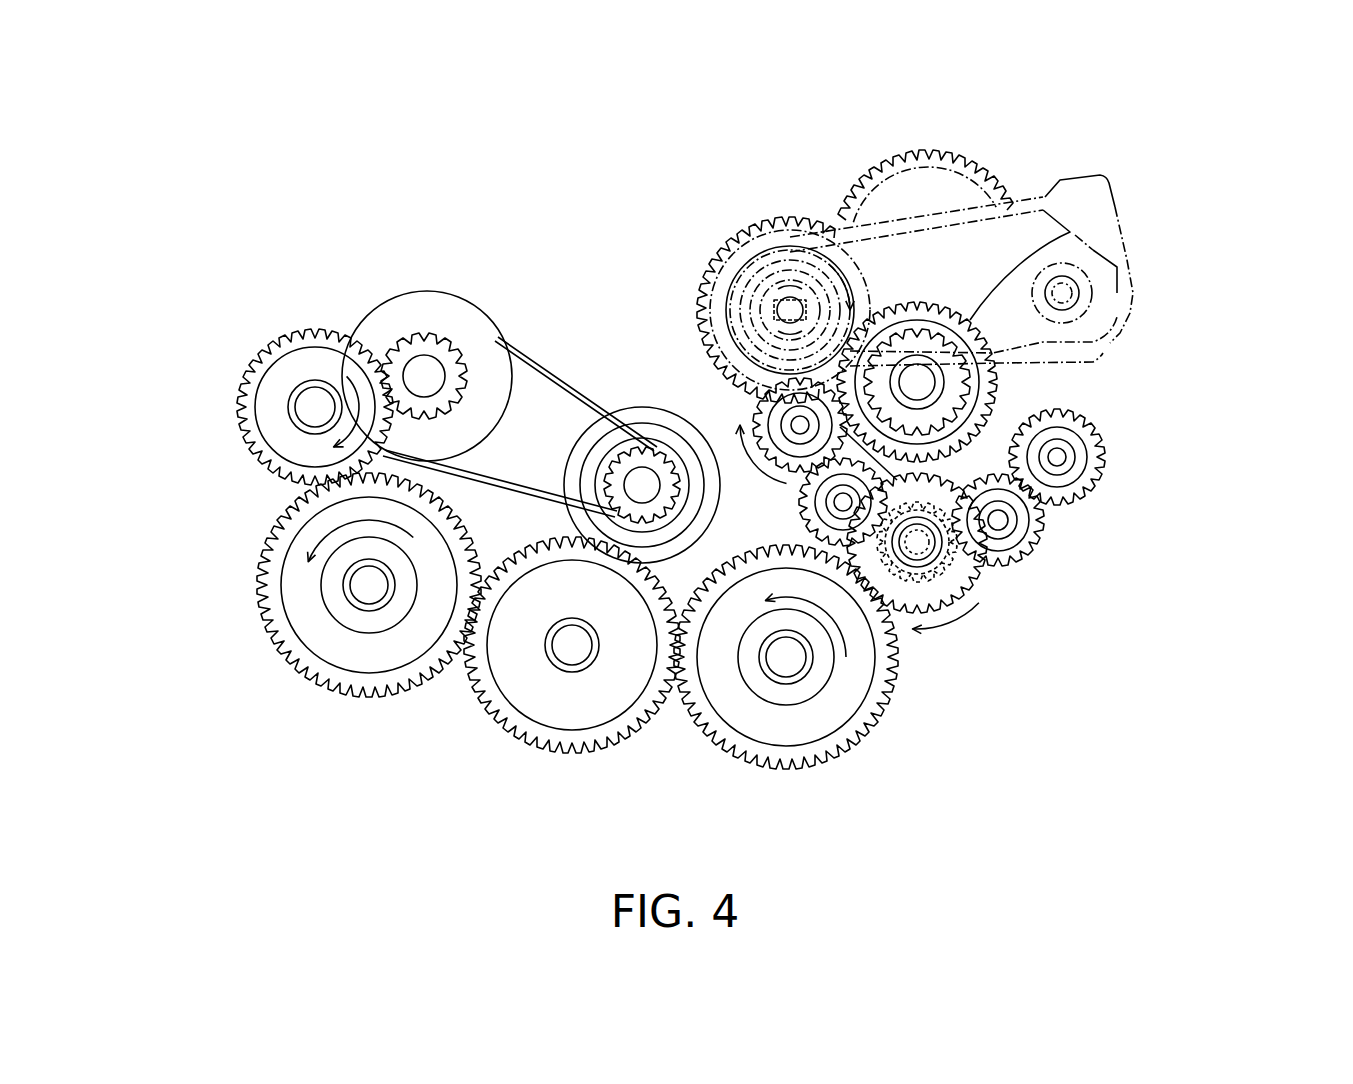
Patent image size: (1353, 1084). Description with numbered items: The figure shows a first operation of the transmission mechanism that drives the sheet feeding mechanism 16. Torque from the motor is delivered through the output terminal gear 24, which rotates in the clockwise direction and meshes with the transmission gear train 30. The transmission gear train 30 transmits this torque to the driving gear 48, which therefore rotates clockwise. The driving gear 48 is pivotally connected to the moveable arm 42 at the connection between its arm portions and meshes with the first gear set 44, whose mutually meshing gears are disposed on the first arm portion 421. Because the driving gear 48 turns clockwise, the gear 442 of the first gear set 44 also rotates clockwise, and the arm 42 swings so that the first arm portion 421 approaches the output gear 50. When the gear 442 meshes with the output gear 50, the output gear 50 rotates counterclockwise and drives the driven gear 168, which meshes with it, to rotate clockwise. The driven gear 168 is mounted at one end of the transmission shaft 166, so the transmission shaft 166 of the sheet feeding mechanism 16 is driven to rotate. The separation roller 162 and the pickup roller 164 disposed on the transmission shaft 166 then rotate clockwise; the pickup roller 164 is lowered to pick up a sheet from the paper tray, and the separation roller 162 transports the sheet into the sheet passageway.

The sheet feeding mechanism 16 is at (1041, 166).
The output terminal gear 24 is at (288, 362).
The transmission gear train 30 is at (260, 662).
The arm 42 is at (1005, 426).
The first gear set 44 is at (780, 502).
The driving gear 48 is at (960, 577).
The output gear 50 is at (1070, 232).
The separation roller 162 is at (853, 277).
The pickup roller 164 is at (1082, 369).
The transmission shaft 166 is at (797, 307).
The driven gear 168 is at (750, 217).
The first arm portion 421 is at (857, 447).
The gear 442 is at (779, 403).